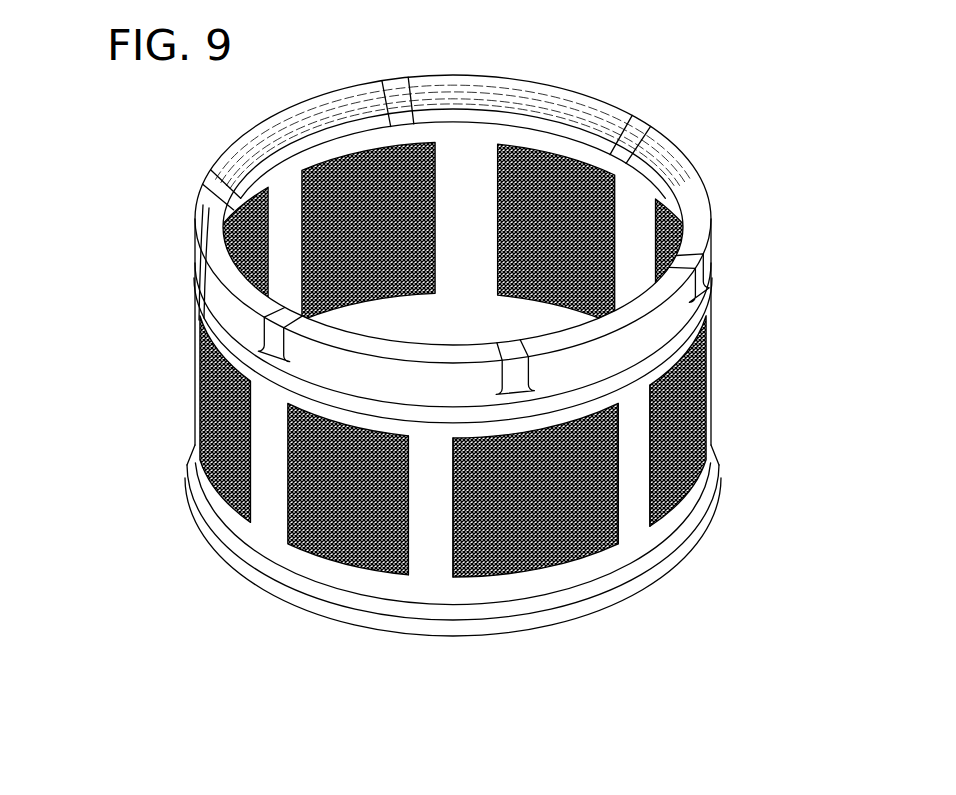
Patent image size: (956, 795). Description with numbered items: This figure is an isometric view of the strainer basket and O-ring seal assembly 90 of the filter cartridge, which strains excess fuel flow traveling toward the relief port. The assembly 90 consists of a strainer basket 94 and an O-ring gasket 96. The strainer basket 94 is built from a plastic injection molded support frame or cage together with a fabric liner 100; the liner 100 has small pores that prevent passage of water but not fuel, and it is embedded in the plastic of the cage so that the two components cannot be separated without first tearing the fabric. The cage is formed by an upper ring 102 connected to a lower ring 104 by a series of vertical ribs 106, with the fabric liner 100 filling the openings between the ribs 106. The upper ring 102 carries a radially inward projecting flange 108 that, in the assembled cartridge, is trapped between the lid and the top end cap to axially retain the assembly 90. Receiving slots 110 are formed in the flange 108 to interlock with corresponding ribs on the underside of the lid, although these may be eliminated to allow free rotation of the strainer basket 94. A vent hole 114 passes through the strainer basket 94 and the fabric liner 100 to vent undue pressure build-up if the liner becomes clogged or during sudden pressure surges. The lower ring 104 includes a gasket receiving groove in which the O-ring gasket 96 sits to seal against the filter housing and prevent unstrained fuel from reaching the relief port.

The strainer basket and O-ring seal assembly 90 is at (150, 190).
The strainer basket 94 is at (250, 537).
The O-ring gasket 96 is at (690, 532).
The fabric liner 100 is at (454, 359).
The upper ring 102 is at (400, 390).
The lower ring 104 is at (308, 612).
The vertical ribs 106 is at (430, 578).
The radially inward projecting flange 108 is at (541, 103).
The receiving slots 110 is at (628, 127).
The vent hole 114 is at (197, 262).